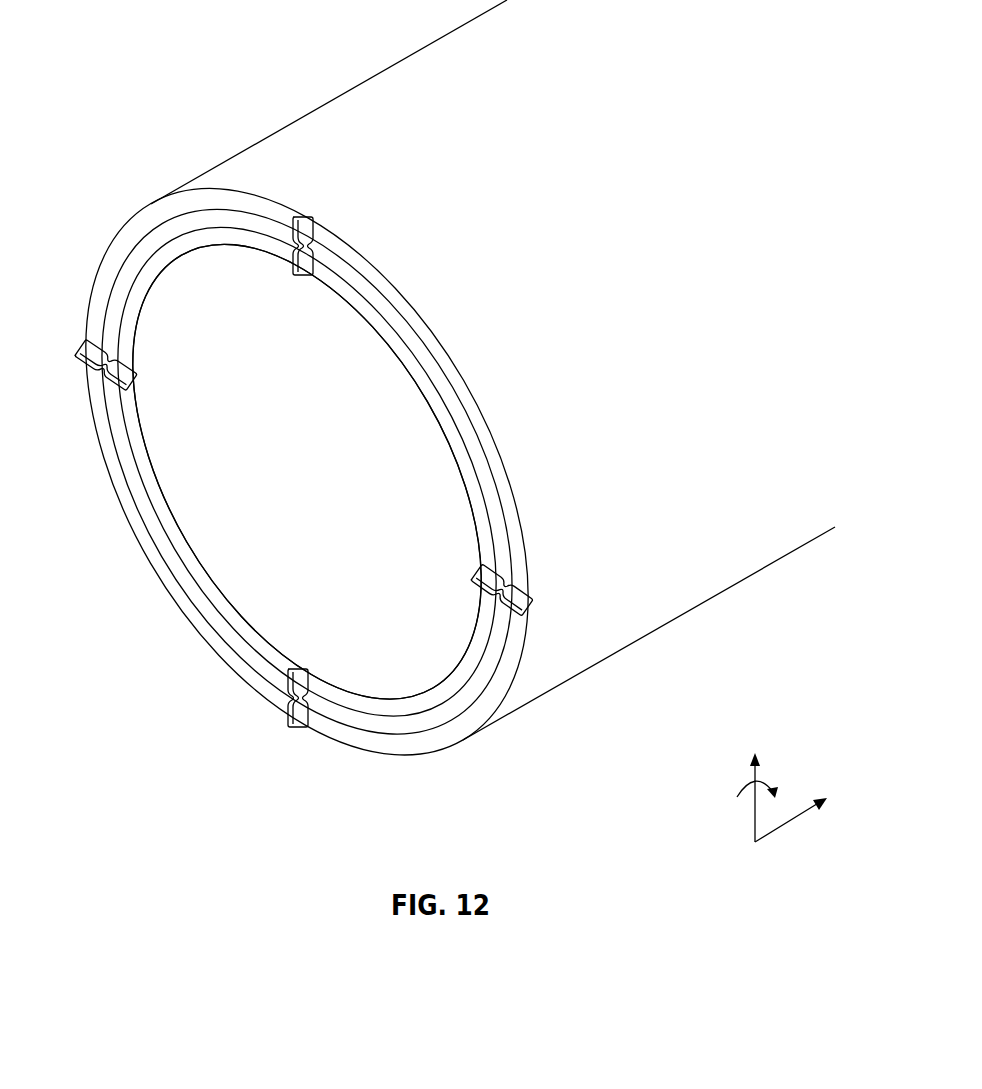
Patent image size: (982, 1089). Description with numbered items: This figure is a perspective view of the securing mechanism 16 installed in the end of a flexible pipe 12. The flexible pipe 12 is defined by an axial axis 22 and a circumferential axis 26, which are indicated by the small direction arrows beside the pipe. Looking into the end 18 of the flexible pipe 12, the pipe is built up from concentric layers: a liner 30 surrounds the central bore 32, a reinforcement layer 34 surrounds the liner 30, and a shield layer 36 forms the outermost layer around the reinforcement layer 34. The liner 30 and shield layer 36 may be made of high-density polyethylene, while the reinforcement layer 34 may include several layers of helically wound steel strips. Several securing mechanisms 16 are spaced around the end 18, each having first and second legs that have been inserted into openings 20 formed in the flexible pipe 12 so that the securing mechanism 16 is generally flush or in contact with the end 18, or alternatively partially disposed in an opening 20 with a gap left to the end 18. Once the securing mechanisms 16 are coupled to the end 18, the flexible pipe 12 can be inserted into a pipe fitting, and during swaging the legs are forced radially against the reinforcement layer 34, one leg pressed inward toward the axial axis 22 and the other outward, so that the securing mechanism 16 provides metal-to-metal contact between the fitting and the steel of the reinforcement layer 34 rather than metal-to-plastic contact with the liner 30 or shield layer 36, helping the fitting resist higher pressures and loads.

The flexible pipe 12 is at (267, 50).
The securing mechanism 16 is at (92, 356).
The end 18 is at (624, 648).
The openings 20 is at (307, 275).
The axial axis 22 is at (790, 822).
The circumferential axis 26 is at (766, 784).
The liner 30 is at (467, 485).
The bore 32 is at (242, 557).
The reinforcement layer 34 is at (453, 420).
The shield layer 36 is at (122, 242).